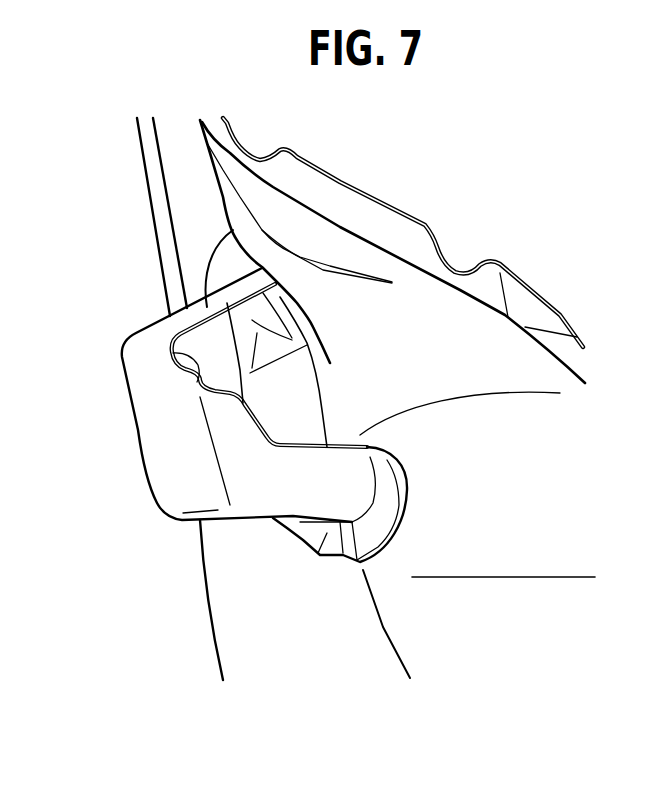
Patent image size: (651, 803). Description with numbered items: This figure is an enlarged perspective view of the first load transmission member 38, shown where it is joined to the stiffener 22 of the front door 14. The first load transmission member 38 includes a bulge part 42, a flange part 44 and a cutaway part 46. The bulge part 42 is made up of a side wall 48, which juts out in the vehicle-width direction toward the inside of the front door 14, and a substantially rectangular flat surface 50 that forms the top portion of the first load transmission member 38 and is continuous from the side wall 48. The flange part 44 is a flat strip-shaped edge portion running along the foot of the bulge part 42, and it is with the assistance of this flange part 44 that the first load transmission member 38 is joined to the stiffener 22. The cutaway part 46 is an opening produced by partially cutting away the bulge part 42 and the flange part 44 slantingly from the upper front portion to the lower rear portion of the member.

The front door 14 is at (103, 242).
The stiffener 22 is at (368, 632).
The first load transmission member 38 is at (224, 486).
The bulge part 42 is at (215, 463).
The flange part 44 is at (316, 555).
The cutaway part 46 is at (172, 355).
The side wall 48 is at (253, 520).
The flat surface 50 is at (148, 420).